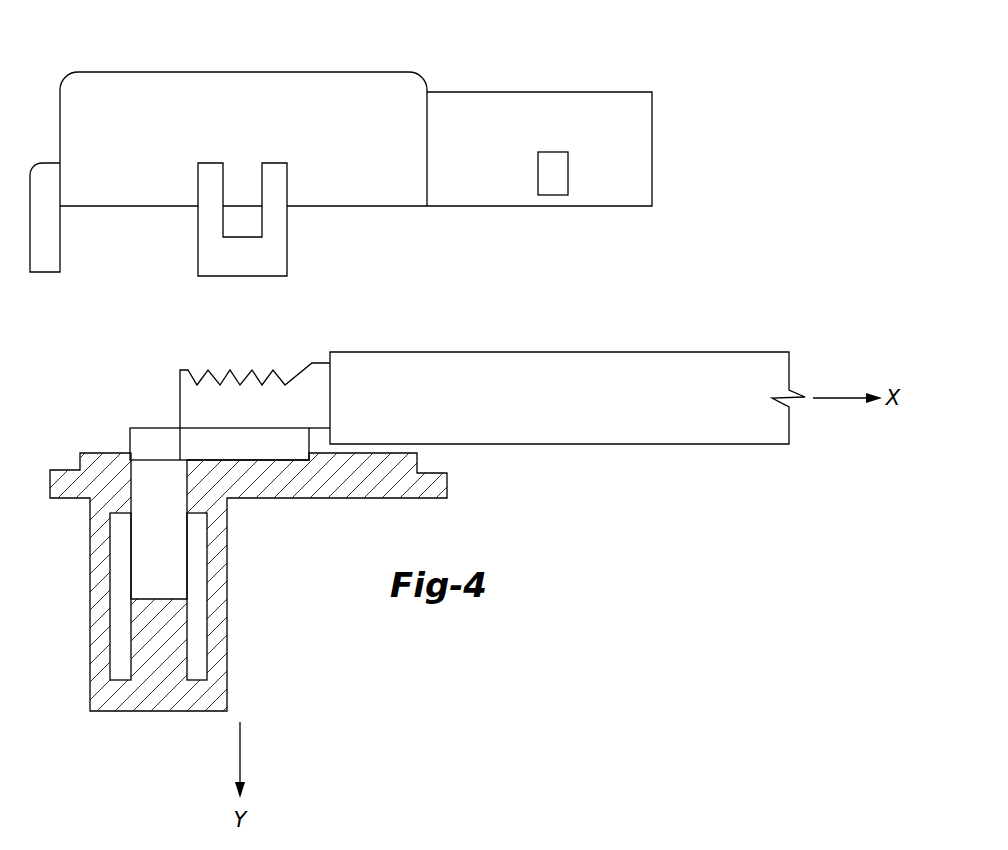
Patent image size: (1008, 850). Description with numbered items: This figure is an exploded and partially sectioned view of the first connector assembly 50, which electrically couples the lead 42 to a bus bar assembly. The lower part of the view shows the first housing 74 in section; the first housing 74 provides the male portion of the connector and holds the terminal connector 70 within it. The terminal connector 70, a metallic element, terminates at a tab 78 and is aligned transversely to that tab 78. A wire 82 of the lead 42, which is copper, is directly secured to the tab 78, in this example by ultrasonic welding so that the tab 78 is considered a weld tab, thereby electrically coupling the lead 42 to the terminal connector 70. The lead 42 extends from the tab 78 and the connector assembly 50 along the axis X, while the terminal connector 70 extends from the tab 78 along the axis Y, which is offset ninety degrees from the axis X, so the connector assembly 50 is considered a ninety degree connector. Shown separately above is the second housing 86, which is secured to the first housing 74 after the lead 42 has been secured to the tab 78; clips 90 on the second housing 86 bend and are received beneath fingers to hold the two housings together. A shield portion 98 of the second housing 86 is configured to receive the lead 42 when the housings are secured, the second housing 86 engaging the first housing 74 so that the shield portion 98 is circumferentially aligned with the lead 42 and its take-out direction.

The lead 42 is at (635, 352).
The first connector assembly 50 is at (760, 130).
The terminal connector 70 is at (132, 658).
The first housing 74 is at (227, 647).
The tab 78 is at (205, 438).
The wire 82 is at (230, 370).
The second housing 86 is at (245, 72).
The clips 90 is at (287, 253).
The shield portion 98 is at (538, 92).